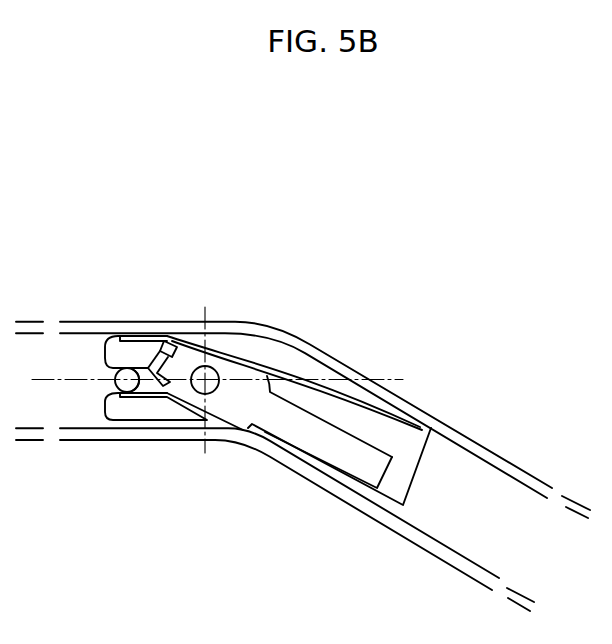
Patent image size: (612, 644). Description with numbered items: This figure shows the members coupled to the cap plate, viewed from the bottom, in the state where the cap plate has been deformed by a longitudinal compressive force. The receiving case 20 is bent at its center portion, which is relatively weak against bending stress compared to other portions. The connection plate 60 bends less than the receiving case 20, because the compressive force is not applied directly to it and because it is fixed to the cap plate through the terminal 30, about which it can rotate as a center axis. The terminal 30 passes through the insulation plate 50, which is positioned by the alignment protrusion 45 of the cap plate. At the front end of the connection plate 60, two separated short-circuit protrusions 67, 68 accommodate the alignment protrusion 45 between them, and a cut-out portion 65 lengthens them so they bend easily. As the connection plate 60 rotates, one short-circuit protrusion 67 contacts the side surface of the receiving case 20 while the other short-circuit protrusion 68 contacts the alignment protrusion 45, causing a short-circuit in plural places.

The receiving case 20 is at (382, 397).
The terminal 30 is at (212, 387).
The alignment protrusion 45 is at (127, 384).
The insulation plate 50 is at (420, 437).
The connection plate 60 is at (282, 407).
The cut-out portion 65 is at (170, 343).
The short-circuit protrusion 67 is at (151, 337).
The short-circuit protrusion 68 is at (145, 394).